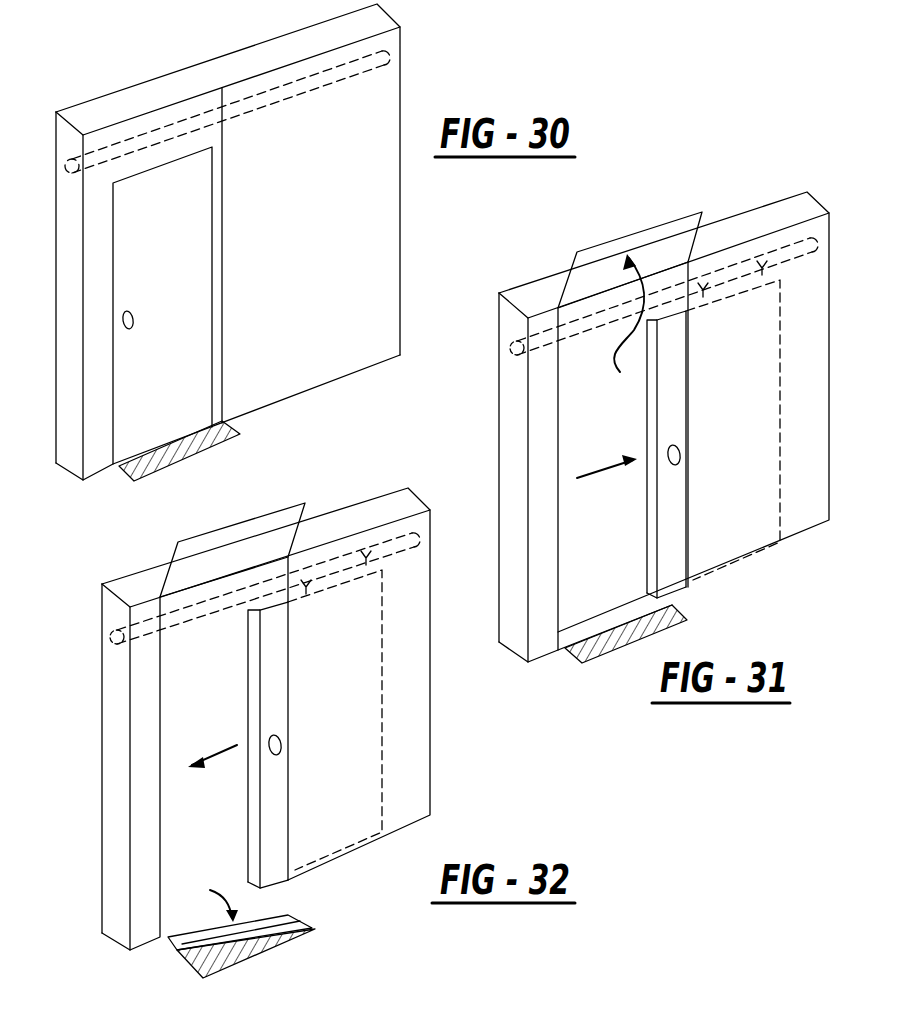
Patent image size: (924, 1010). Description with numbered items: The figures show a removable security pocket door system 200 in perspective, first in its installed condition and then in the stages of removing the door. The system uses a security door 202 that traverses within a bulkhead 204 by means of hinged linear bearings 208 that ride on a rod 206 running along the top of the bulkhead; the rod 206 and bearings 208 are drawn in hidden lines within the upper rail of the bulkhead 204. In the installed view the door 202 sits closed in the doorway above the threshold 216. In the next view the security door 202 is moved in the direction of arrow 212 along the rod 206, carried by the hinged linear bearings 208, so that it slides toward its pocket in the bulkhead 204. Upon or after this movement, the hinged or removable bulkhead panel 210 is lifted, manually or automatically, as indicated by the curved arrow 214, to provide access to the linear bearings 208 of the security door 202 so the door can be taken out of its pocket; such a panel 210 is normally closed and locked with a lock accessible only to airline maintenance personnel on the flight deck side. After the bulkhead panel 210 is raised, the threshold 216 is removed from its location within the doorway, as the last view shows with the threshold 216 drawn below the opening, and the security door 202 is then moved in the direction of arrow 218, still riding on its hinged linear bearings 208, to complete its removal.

In FIG. 30, the removable security pocket door system 200 is at (247, 242).
In FIG. 30, the security door 202 is at (176, 357).
In FIG. 31, the security door 202 is at (780, 446).
In FIG. 32, the security door 202 is at (273, 882).
In FIG. 30, the bulkhead 204 is at (70, 106).
In FIG. 31, the bulkhead 204 is at (829, 375).
In FIG. 32, the bulkhead 204 is at (138, 572).
In FIG. 30, the rod 206 is at (77, 178).
In FIG. 31, the rod 206 is at (803, 265).
In FIG. 32, the rod 206 is at (178, 627).
In FIG. 30, the hinged linear bearings 208 is at (118, 172).
In FIG. 31, the hinged linear bearings 208 is at (703, 288).
In FIG. 32, the hinged linear bearings 208 is at (306, 585).
In FIG. 31, the bulkhead panel 210 is at (663, 224).
In FIG. 32, the bulkhead panel 210 is at (260, 516).
In FIG. 31, the arrow 212 is at (590, 470).
In FIG. 31, the rotation arrow 214 is at (620, 372).
In FIG. 31, the threshold 216 is at (678, 604).
In FIG. 32, the threshold 216 is at (320, 946).
In FIG. 32, the arrow 218 is at (228, 752).